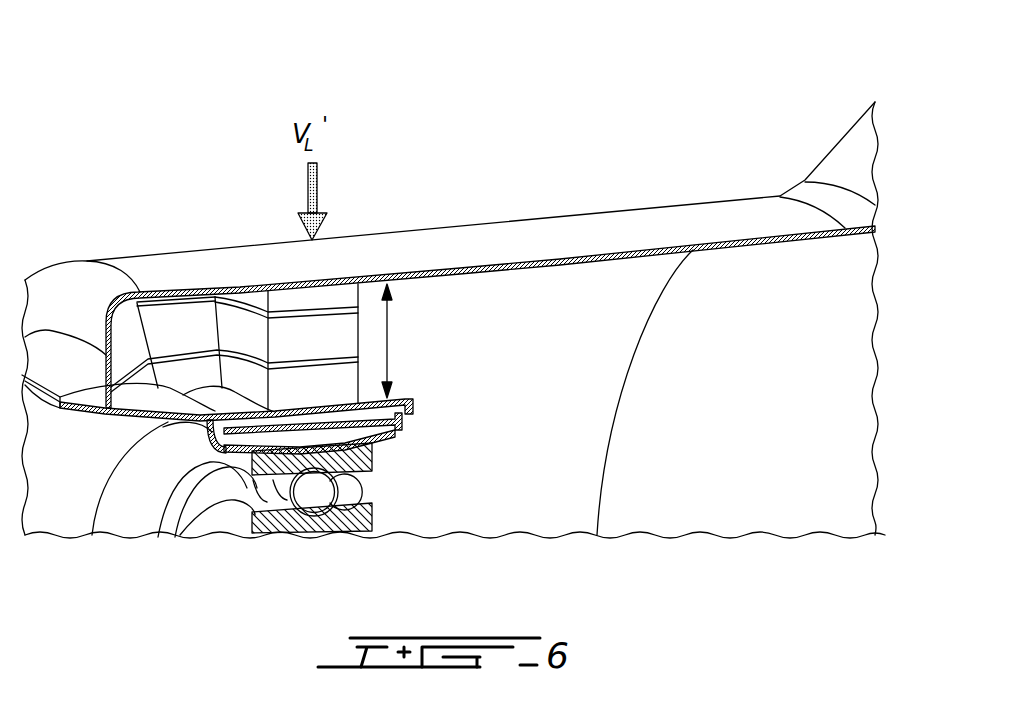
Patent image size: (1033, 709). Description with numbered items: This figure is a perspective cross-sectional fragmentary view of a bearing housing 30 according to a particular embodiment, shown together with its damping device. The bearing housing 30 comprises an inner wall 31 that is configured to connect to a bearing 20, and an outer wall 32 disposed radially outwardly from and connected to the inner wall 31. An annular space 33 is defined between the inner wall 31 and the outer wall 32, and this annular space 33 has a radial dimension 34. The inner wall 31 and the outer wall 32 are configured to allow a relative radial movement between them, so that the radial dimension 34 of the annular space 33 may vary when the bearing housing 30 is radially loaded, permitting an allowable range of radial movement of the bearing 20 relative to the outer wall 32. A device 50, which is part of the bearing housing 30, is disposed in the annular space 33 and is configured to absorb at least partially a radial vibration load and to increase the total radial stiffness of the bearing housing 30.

The bearing housing 30 is at (530, 203).
The inner wall 31 is at (367, 390).
The outer wall 32 is at (190, 267).
The annular space 33 is at (205, 395).
The radial dimension 34 is at (388, 340).
The device 50 is at (307, 385).
The bearing 20 is at (333, 517).